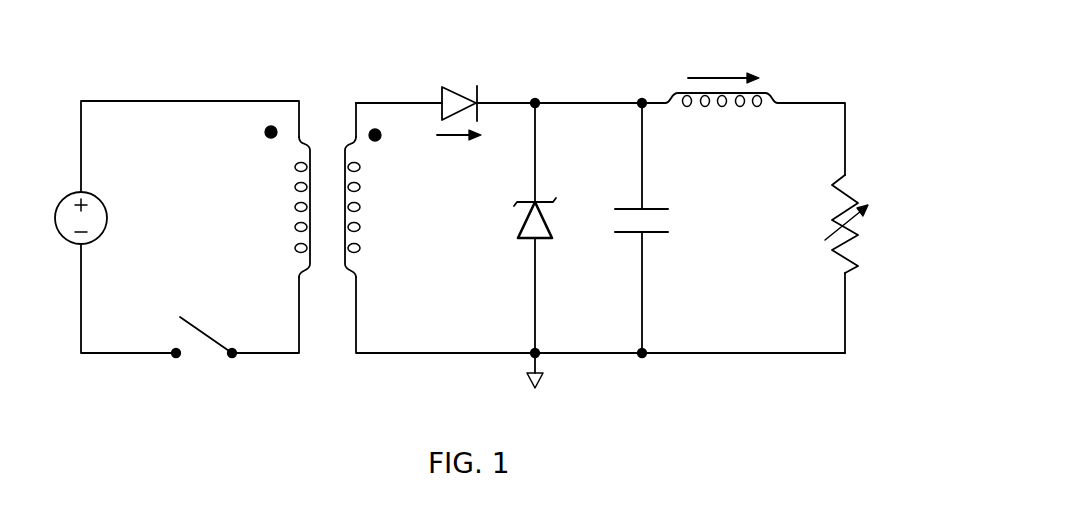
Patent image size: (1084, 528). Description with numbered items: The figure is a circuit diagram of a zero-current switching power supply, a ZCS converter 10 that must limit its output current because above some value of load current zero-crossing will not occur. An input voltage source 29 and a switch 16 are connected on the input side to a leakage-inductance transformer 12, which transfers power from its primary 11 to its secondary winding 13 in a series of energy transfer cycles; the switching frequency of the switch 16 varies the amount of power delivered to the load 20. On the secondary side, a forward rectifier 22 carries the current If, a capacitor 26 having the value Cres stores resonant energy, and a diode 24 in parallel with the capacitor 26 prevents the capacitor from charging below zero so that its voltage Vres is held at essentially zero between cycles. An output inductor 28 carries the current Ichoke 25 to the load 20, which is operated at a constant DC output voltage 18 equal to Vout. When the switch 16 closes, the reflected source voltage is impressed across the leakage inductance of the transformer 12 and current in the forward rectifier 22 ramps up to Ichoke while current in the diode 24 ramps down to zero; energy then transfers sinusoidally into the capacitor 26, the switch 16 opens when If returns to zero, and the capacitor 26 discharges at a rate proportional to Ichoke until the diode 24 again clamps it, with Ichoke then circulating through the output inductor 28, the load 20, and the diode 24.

The ZCS converter 10 is at (134, 404).
The primary 11 is at (294, 207).
The leakage-inductance transformer 12 is at (331, 342).
The secondary winding 13 is at (358, 207).
The switch 16 is at (192, 323).
The output voltage 18 is at (845, 104).
The load 20 is at (840, 258).
The forward rectifier 22 is at (448, 87).
The diode 24 is at (545, 220).
The Ichoke 25 is at (697, 75).
The capacitor 26 is at (650, 209).
The output inductor 28 is at (768, 93).
The input voltage source 29 is at (104, 207).